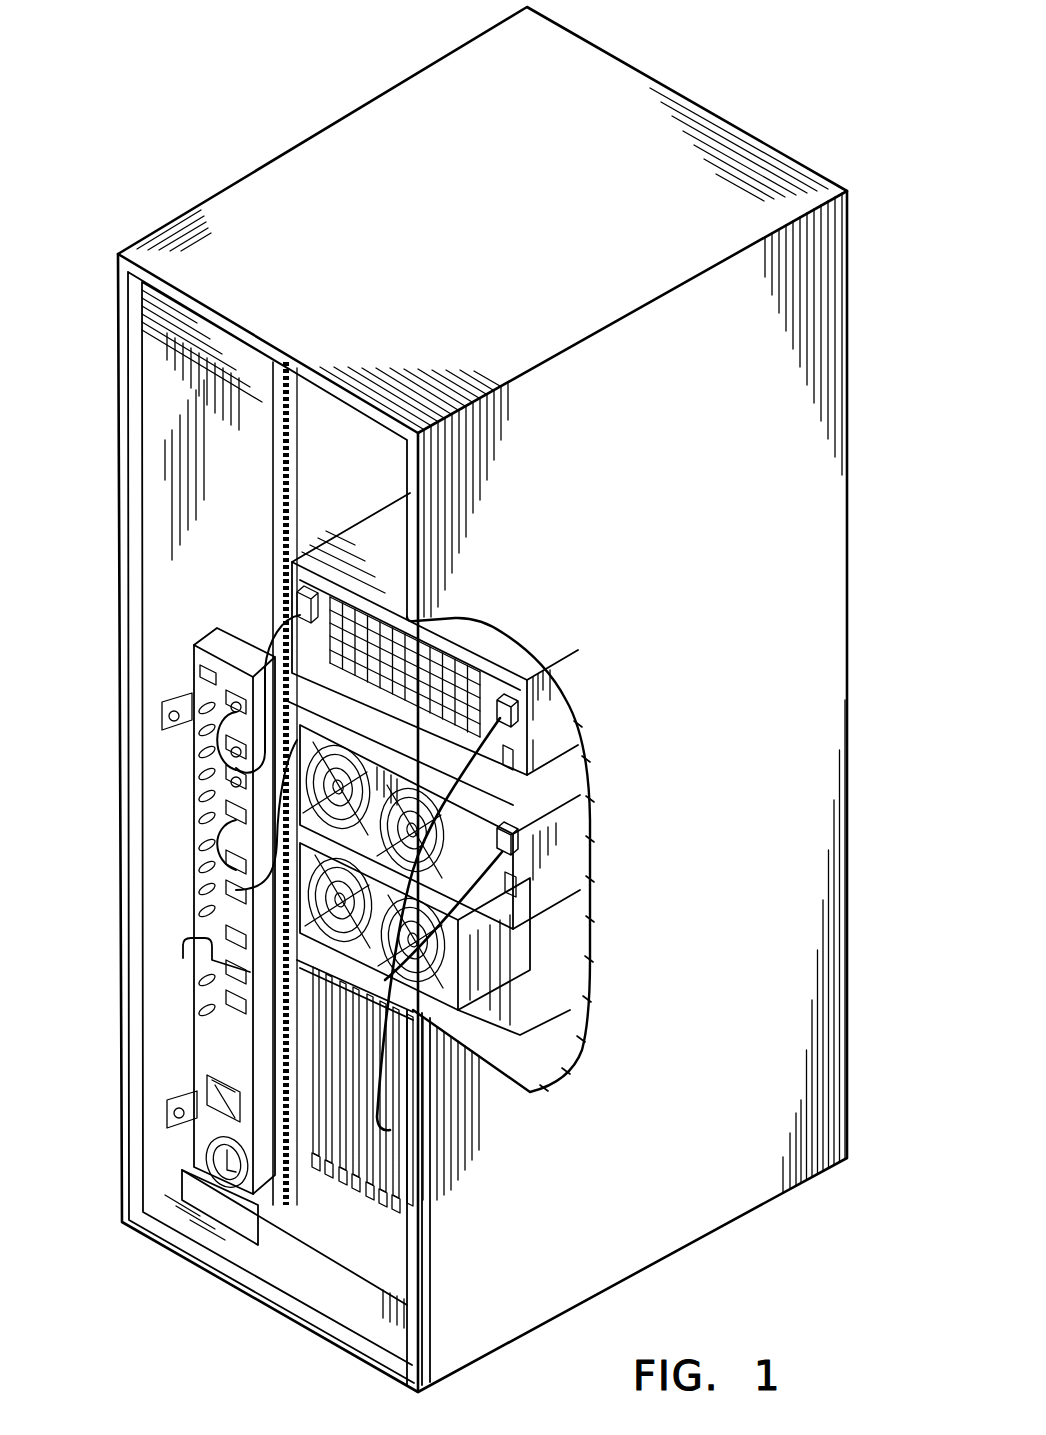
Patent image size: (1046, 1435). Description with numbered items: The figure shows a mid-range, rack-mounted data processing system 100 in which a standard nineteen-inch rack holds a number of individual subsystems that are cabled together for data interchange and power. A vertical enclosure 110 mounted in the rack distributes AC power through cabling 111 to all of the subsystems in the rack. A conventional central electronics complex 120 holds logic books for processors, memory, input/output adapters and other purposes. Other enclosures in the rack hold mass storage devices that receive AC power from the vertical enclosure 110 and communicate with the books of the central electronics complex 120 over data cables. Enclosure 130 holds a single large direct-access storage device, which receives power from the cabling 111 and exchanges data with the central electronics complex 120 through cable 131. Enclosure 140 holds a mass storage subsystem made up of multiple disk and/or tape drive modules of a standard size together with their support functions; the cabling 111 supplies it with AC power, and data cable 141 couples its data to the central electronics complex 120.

The data processing system 100 is at (290, 205).
The vertical enclosure 110 is at (217, 1053).
The cabling 111 is at (230, 626).
The central electronics complex 120 is at (317, 1077).
The enclosure 130 is at (553, 722).
The cable 131 is at (497, 760).
The enclosure 140 is at (562, 842).
The data cable 141 is at (505, 870).